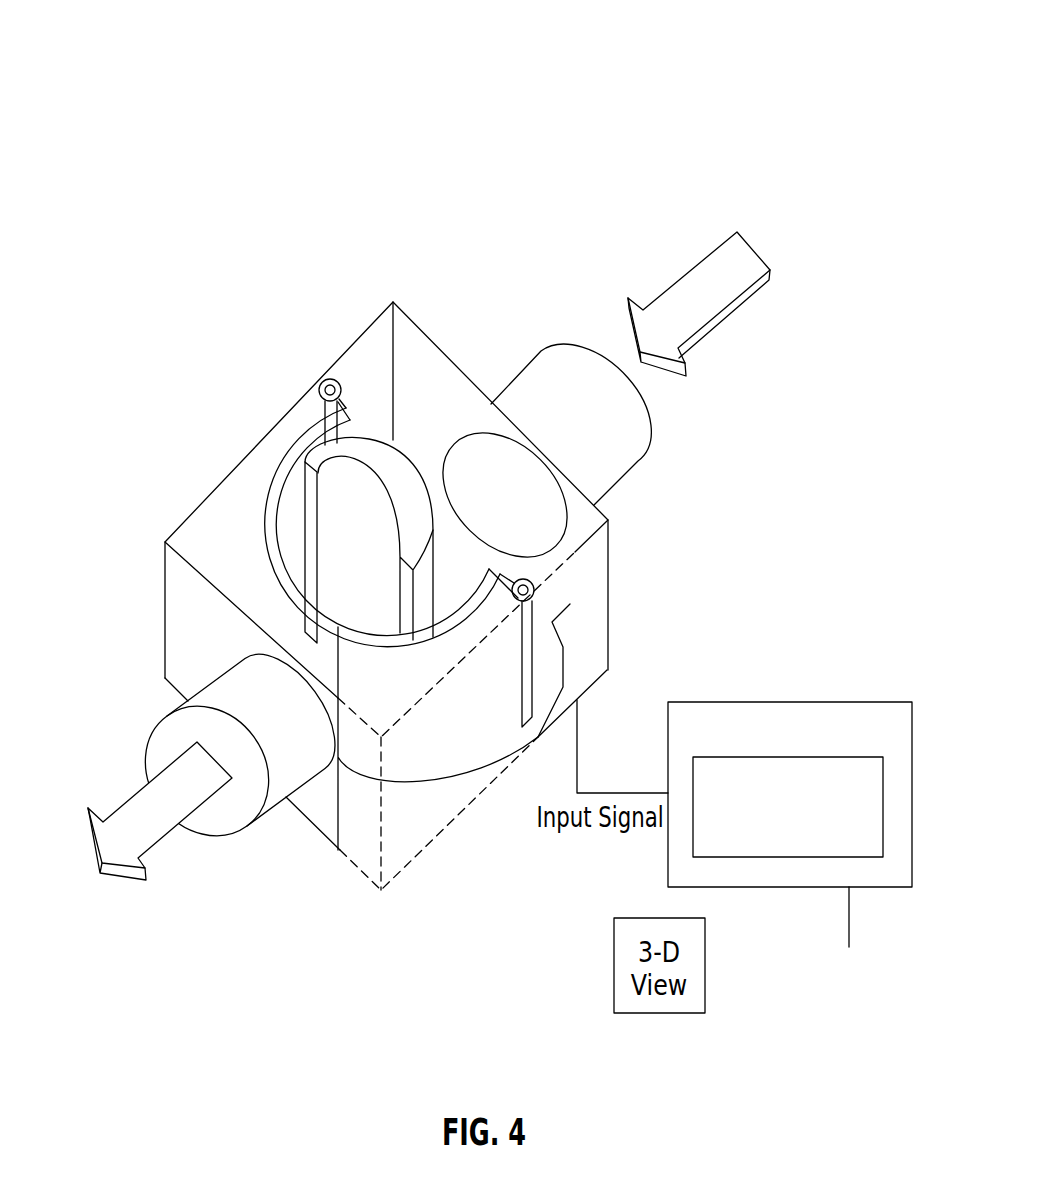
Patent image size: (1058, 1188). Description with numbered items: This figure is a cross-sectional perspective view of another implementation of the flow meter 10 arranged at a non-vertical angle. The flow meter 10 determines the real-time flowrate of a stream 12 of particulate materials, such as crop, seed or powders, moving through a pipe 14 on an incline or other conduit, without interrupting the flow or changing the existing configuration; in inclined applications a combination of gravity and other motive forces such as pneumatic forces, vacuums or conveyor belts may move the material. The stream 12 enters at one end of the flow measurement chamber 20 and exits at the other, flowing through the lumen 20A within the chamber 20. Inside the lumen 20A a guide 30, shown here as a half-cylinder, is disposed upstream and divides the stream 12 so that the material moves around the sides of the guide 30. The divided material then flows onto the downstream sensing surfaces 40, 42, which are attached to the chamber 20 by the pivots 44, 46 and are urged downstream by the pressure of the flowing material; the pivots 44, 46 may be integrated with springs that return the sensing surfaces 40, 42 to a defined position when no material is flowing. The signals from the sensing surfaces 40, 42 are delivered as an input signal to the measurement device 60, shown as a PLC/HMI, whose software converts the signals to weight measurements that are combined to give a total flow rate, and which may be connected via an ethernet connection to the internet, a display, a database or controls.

The flow meter 10 is at (839, 59).
The stream of particulate materials 12 is at (698, 263).
The pipe 14 is at (630, 468).
The flow measurement chamber 20 is at (357, 340).
The lumen 20A is at (404, 330).
The guide 30 is at (398, 447).
The sensing surface 40 is at (290, 446).
The sensing surface 42 is at (403, 647).
The pivot 44 is at (321, 381).
The pivot 46 is at (534, 592).
The measurement device 60 is at (790, 702).